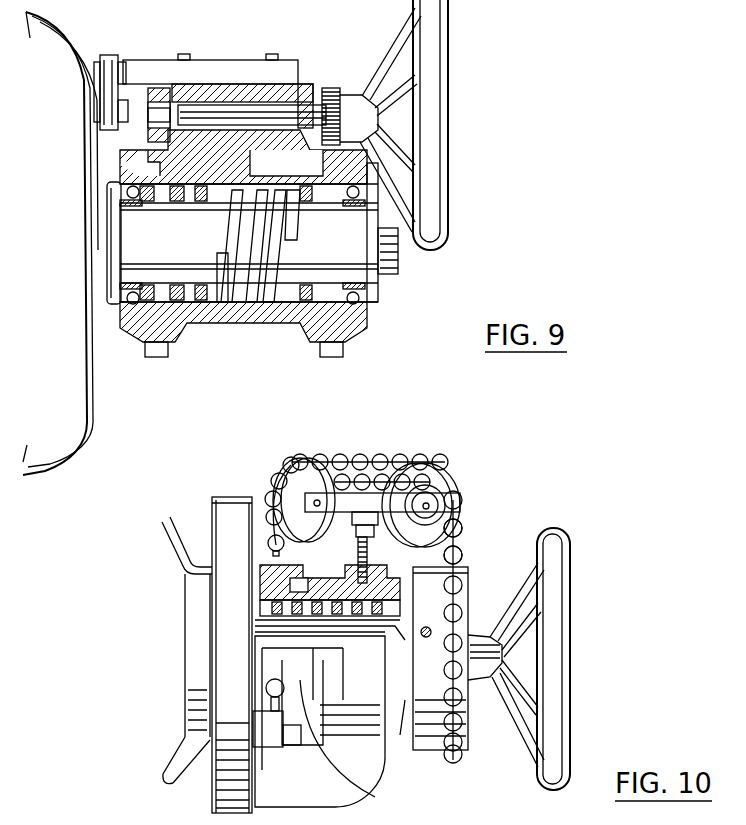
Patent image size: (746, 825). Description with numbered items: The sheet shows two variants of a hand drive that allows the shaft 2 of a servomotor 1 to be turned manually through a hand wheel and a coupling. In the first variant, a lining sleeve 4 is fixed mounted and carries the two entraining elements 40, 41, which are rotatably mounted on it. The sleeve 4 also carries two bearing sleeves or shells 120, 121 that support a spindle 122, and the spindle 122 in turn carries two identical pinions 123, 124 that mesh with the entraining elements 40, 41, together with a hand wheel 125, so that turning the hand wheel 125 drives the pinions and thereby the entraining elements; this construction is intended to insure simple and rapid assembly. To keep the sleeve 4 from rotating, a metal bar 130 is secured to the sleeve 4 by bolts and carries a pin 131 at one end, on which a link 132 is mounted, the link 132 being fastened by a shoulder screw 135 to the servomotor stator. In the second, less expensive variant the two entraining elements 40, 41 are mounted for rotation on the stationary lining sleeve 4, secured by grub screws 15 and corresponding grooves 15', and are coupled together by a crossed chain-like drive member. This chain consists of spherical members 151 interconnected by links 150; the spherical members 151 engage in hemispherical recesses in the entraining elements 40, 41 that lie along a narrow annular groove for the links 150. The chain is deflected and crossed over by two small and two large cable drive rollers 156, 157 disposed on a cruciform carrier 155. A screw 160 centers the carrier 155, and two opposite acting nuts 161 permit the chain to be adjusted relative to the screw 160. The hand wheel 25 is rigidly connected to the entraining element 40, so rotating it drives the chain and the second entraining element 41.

In FIG. 9, the servomotor 1 is at (95, 398).
In FIG. 10, the shaft 2 is at (333, 618).
In FIG. 9, the lining sleeve 4 is at (306, 200).
In FIG. 10, the lining sleeve 4 is at (404, 737).
In FIG. 10, the grub screws 15 is at (440, 658).
In FIG. 10, the grooves 15' is at (330, 556).
In FIG. 10, the hand wheel 25 is at (540, 783).
In FIG. 9, the entraining element 40 is at (372, 170).
In FIG. 10, the entraining element 40 is at (428, 735).
In FIG. 9, the entraining element 41 is at (122, 160).
In FIG. 10, the entraining element 41 is at (345, 797).
In FIG. 9, the bearing sleeve 120 is at (306, 84).
In FIG. 9, the bearing sleeve 121 is at (208, 100).
In FIG. 9, the spindle 122 is at (248, 110).
In FIG. 9, the pinion 123 is at (334, 88).
In FIG. 9, the pinion 124 is at (150, 128).
In FIG. 9, the hand wheel 125 is at (448, 18).
In FIG. 9, the metal bar 130 is at (172, 60).
In FIG. 9, the pin 131 is at (132, 62).
In FIG. 9, the link 132 is at (108, 56).
In FIG. 9, the shoulder screw 135 is at (112, 112).
In FIG. 10, the links 150 is at (460, 602).
In FIG. 10, the spherical members 151 is at (462, 554).
In FIG. 10, the cruciform carrier 155 is at (440, 502).
In FIG. 10, the small cable drive rollers 156 is at (462, 528).
In FIG. 10, the large cable drive rollers 157 is at (285, 478).
In FIG. 10, the screw 160 is at (393, 458).
In FIG. 10, the nuts 161 is at (344, 494).